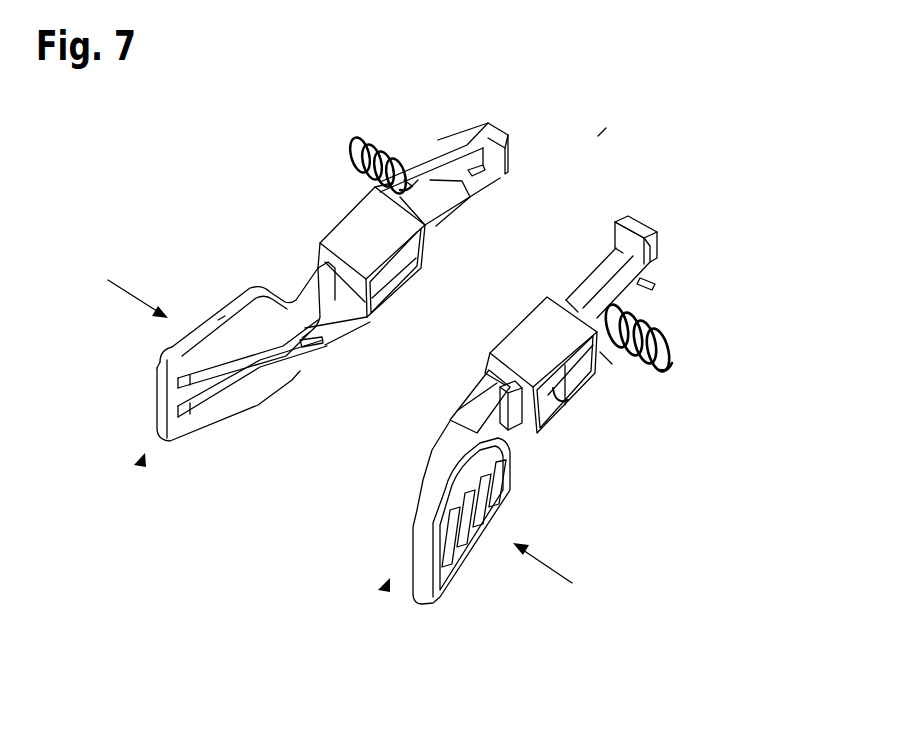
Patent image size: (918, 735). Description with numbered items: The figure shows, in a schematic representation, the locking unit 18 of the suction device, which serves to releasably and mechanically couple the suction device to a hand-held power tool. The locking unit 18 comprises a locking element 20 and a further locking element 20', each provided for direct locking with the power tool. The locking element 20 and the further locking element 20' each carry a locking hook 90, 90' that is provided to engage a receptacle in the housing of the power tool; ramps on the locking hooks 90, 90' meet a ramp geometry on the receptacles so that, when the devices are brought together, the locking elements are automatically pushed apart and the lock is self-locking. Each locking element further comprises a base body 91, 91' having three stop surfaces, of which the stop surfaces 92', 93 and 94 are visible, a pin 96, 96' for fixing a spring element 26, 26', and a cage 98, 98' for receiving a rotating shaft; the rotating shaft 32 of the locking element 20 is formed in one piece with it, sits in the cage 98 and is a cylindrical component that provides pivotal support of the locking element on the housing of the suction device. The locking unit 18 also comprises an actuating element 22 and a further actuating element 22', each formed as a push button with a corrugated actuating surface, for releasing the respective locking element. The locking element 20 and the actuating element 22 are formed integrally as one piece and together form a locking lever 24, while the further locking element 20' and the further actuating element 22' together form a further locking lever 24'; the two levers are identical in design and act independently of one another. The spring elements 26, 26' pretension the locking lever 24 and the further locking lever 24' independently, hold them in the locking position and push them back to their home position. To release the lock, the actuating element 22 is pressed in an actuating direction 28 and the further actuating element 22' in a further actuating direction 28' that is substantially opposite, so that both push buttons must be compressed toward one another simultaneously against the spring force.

The locking unit 18 is at (598, 136).
The locking element 20 is at (587, 276).
The further locking element 20' is at (440, 155).
The actuating element 22 is at (467, 520).
The further actuating element 22' is at (263, 345).
The locking lever 24 is at (350, 612).
The further locking lever 24' is at (124, 498).
The spring element 26 is at (667, 364).
The further spring element 26' is at (351, 140).
The actuating direction 28 is at (576, 549).
The further actuating direction 28' is at (138, 258).
The rotating shaft 32 is at (560, 397).
The locking hook 90 is at (659, 209).
The further locking hook 90' is at (479, 114).
The base body 91 is at (461, 386).
The further base body 91' is at (441, 227).
The stop surface 92' is at (504, 198).
The stop surface 93 is at (647, 283).
The stop surface 94 is at (513, 429).
The pin 96 is at (629, 388).
The further pin 96' is at (398, 135).
The cage 98 is at (526, 361).
The further cage 98' is at (358, 241).